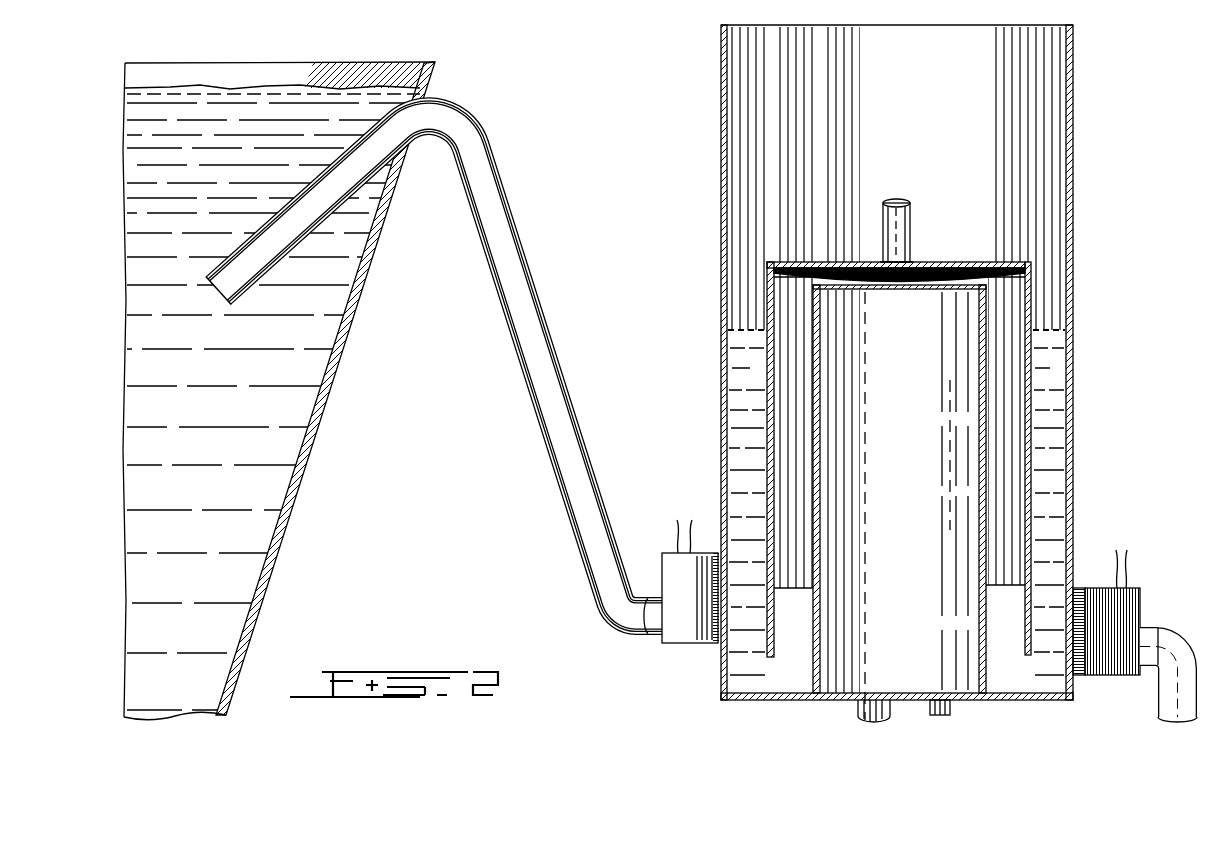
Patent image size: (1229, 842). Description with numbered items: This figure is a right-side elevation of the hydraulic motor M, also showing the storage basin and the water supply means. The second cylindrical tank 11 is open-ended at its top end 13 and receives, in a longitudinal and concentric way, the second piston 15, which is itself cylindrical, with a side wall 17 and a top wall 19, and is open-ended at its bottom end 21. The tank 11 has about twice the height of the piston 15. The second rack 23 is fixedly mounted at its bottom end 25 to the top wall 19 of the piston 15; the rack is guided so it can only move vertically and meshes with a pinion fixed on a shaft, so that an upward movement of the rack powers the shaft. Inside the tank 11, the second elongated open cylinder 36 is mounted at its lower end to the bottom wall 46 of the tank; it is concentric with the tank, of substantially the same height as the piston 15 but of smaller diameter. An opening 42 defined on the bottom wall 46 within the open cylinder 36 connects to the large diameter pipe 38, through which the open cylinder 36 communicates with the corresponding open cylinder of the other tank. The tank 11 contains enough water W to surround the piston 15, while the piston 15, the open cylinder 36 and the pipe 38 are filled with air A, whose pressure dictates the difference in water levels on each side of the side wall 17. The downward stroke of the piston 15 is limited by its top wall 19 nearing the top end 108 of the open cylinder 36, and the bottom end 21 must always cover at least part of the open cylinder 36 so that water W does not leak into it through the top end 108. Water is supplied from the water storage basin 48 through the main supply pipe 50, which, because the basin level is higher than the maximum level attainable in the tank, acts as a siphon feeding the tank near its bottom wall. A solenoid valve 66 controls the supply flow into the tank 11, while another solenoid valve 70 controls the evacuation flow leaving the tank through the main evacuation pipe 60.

The second cylindrical tank 11 is at (924, 372).
The top end 13 is at (1067, 23).
The second piston 15 is at (1036, 365).
The side wall 17 is at (768, 403).
The top wall 19 is at (853, 262).
The bottom end 21 is at (1028, 658).
The second rack 23 is at (918, 218).
The bottom end 25 is at (910, 258).
The second elongated open cylinder 36 is at (980, 455).
The large diameter pipe 38 is at (858, 708).
The opening 42 is at (863, 697).
The bottom wall 46 is at (790, 699).
The water storage basin 48 is at (312, 426).
The main supply pipe 50 is at (558, 487).
The main evacuation pipe 60 is at (1174, 668).
The solenoid valve 66 is at (700, 636).
The solenoid valve 70 is at (1130, 598).
The top end 108 is at (880, 444).
The hydraulic motor M is at (686, 66).
The air A is at (993, 278).
The water W is at (745, 462).